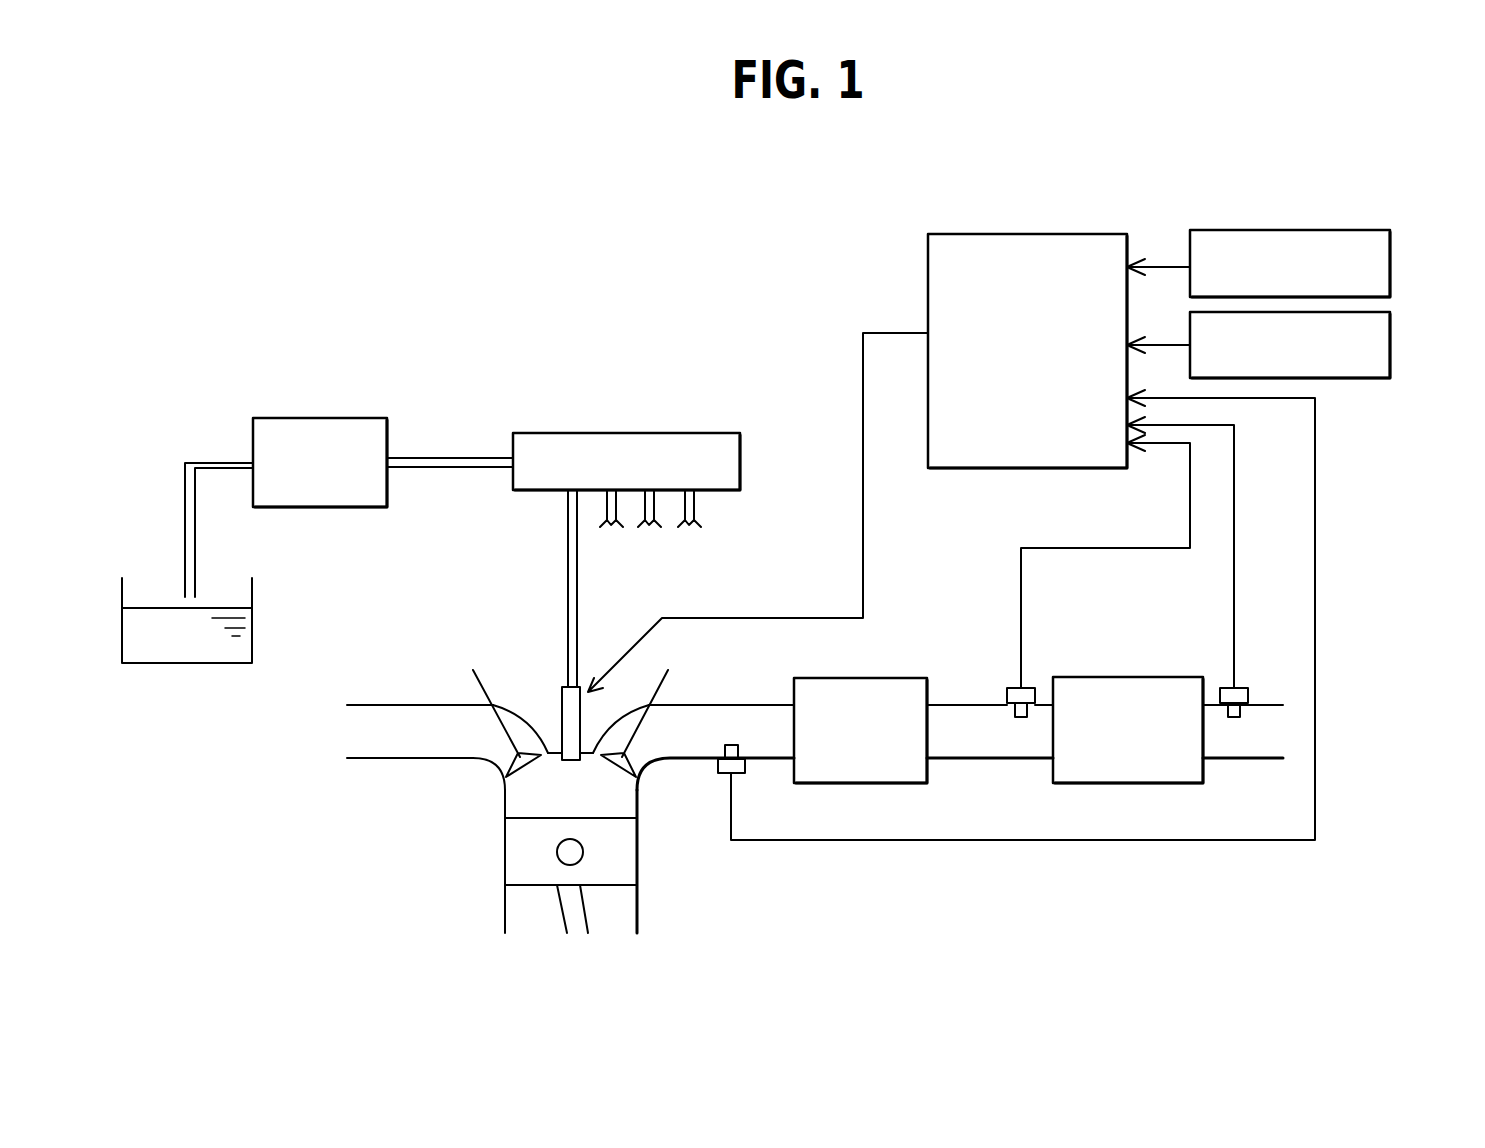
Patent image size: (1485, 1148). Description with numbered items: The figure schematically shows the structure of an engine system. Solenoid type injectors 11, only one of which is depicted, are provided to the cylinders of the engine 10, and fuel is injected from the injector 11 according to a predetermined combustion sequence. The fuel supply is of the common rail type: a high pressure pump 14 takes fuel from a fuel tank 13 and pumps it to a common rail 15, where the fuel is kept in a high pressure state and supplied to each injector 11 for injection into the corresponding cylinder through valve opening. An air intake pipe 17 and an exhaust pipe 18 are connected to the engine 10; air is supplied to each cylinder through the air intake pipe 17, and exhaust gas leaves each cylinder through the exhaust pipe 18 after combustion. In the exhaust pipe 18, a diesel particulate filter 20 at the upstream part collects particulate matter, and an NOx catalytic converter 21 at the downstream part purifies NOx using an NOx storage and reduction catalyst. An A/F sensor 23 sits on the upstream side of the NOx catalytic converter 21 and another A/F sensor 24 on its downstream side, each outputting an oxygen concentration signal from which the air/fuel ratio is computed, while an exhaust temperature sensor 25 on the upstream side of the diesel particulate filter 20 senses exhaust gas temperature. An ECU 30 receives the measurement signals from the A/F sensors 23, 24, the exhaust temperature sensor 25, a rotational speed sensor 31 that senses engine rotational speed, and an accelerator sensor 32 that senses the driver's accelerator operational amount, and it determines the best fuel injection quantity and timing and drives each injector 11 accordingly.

The engine 10 is at (496, 865).
The injector 11 is at (562, 708).
The fuel tank 13 is at (188, 665).
The high pressure pump 14 is at (345, 418).
The common rail 15 is at (643, 433).
The air intake pipe 17 is at (388, 762).
The exhaust pipe 18 is at (685, 762).
The diesel particulate filter 20 is at (863, 678).
The NOx catalytic converter 21 is at (1157, 677).
The A/F sensor 23 is at (1030, 688).
The A/F sensor 24 is at (1240, 688).
The exhaust temperature sensor 25 is at (745, 776).
The ECU 30 is at (1040, 234).
The rotational speed sensor 31 is at (1393, 265).
The accelerator sensor 32 is at (1393, 345).